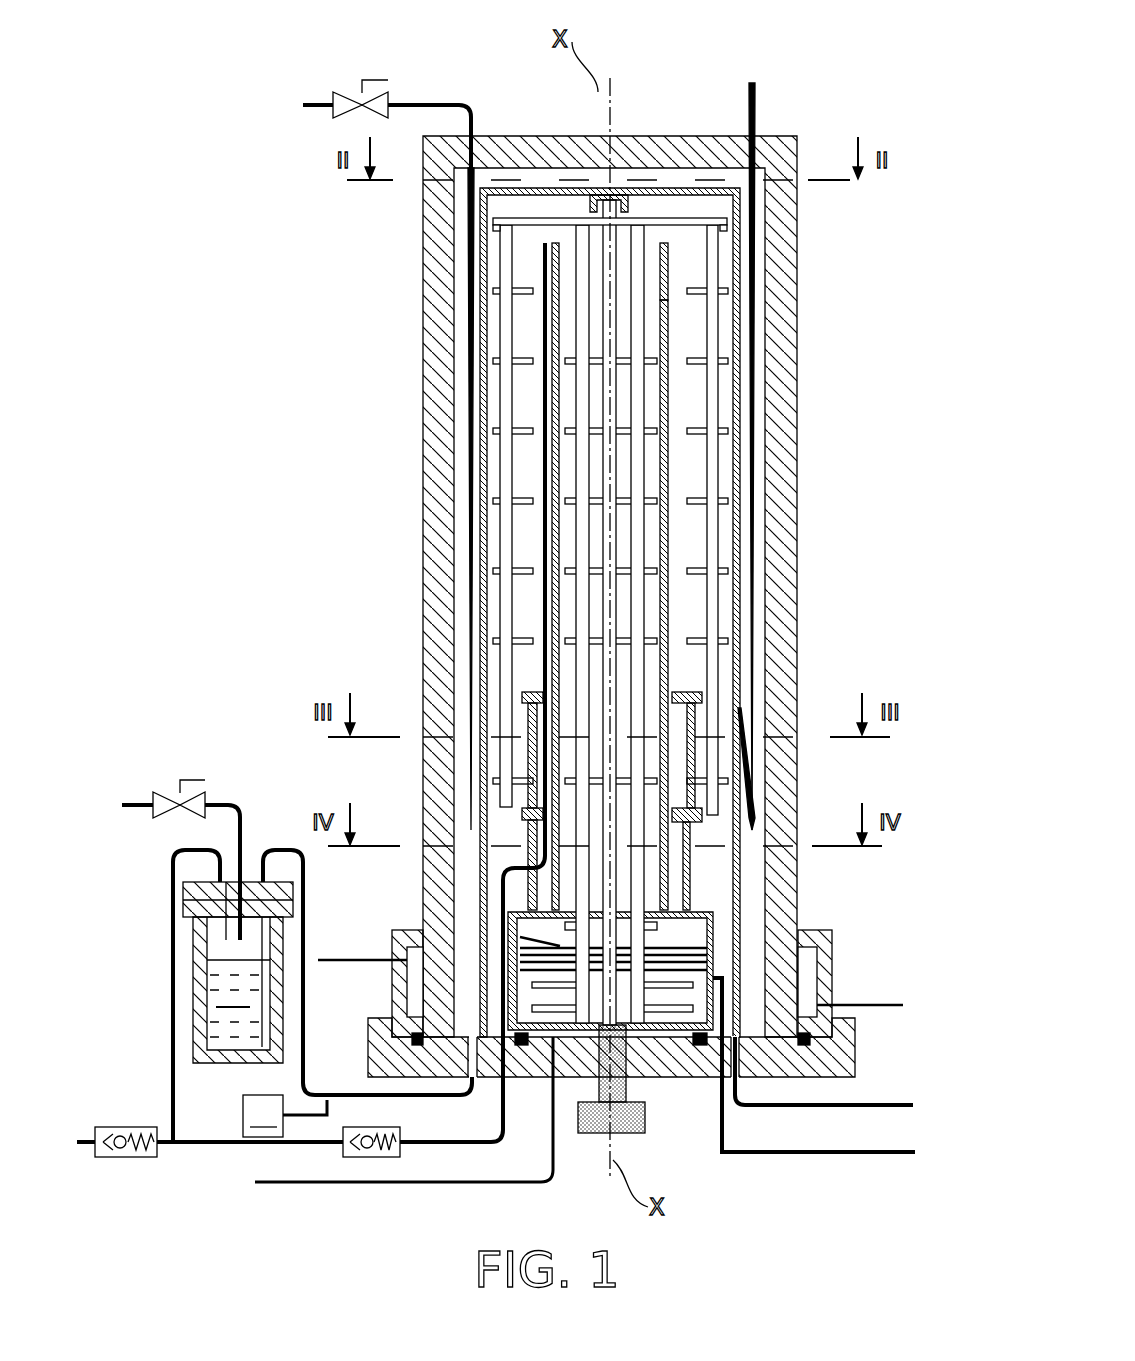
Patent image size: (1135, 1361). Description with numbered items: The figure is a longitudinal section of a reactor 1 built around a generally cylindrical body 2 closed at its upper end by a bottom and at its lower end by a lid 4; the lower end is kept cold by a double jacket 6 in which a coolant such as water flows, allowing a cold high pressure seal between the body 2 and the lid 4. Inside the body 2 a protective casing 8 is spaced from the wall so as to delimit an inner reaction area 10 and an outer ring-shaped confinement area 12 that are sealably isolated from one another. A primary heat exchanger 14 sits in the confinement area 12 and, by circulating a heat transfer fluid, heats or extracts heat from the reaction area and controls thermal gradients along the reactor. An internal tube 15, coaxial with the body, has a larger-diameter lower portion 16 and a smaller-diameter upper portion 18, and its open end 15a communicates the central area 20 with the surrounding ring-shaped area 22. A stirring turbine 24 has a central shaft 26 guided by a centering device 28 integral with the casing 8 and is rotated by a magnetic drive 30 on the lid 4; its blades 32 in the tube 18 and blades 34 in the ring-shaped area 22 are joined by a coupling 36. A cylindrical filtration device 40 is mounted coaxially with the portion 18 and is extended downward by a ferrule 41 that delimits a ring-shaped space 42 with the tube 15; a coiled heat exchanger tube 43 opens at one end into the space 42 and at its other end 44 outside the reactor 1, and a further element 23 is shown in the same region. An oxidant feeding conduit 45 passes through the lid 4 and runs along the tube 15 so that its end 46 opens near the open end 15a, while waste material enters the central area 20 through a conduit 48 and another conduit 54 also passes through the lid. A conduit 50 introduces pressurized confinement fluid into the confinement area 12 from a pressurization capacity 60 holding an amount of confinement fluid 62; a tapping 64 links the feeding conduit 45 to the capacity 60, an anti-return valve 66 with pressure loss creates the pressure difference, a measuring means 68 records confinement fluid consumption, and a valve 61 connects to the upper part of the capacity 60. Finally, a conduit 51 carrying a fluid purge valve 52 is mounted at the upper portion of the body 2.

The reactor 1 is at (599, 586).
The body 2 is at (780, 620).
The lid 4 is at (385, 1052).
The double jacket 6 is at (397, 985).
The protective casing 8 is at (738, 408).
The reaction area 10 is at (700, 272).
The confinement area 12 is at (472, 411).
The primary heat exchanger 14 is at (470, 651).
The internal tube 15 is at (670, 553).
The open end 15a is at (690, 237).
The lower portion 16 is at (717, 950).
The upper portion 18 is at (527, 578).
The central area 20 is at (570, 268).
The ring-shaped area 22 is at (527, 332).
The heater terminal 23 is at (667, 965).
The stirring turbine 24 is at (497, 295).
The central shaft 26 is at (628, 203).
The centering device 28 is at (613, 237).
The magnetic drive 30 is at (606, 1120).
The blades 32 is at (580, 385).
The blades 34 is at (507, 463).
The coupling 36 is at (547, 232).
The cylindrical filtration device 40 is at (698, 720).
The ferrule 41 is at (688, 873).
The ring-shaped space 42 is at (673, 902).
The tube wound as a coil 43 is at (547, 960).
The end 44 is at (870, 1152).
The feeding conduit 45 is at (255, 1142).
The end 46 is at (505, 222).
The conduit 48 is at (295, 1183).
The conduit 50 is at (407, 1098).
The conduit 51 is at (442, 103).
The fluid purge valve 52 is at (345, 93).
The conduit 54 is at (872, 1105).
The pressurization capacity 60 is at (192, 983).
The valve 61 is at (170, 793).
The confinement fluid 62 is at (238, 998).
The tapping 64 is at (172, 1070).
The anti-return valve 66 is at (397, 1160).
The measuring means 68 is at (285, 1116).